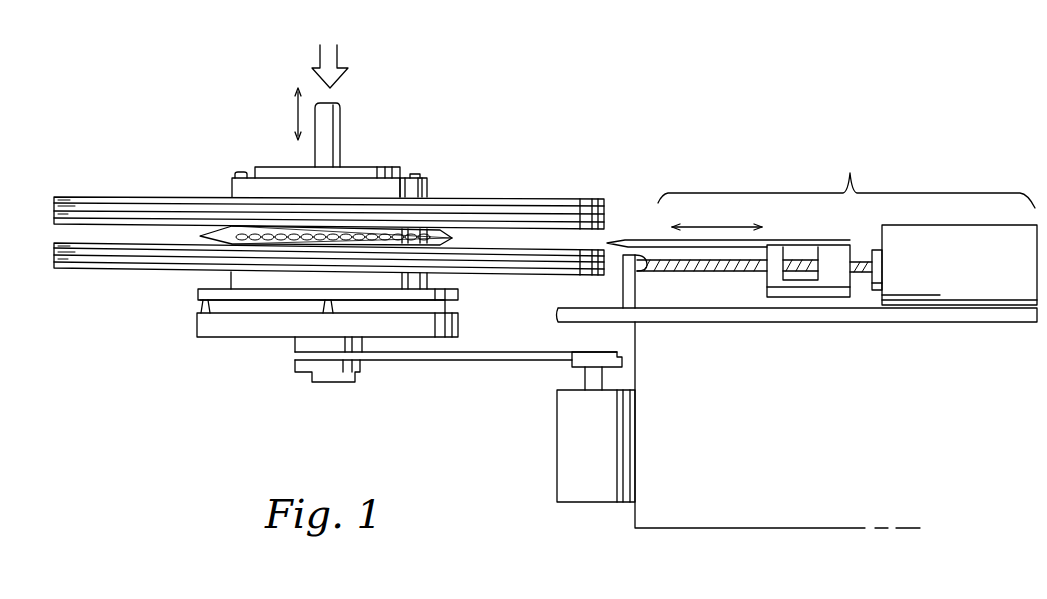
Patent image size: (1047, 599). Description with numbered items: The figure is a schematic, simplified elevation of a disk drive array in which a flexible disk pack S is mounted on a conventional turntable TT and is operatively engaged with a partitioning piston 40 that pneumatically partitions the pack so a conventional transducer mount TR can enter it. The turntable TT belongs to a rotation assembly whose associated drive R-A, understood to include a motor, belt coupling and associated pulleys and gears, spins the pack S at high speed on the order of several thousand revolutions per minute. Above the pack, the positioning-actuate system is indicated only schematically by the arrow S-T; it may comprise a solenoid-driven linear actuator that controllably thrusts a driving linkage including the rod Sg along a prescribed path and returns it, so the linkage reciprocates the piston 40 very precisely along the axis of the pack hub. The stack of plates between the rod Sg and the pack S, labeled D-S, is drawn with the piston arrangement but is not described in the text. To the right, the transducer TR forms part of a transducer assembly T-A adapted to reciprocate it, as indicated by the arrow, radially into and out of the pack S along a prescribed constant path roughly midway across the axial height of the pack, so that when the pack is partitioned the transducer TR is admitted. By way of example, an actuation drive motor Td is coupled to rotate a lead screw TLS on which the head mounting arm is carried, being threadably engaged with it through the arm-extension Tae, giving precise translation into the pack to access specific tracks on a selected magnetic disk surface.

The flexible disk pack S is at (118, 193).
The sheet holder / drive support D-S is at (232, 193).
The rod Sg is at (340, 138).
The positioning-actuate system arrow S-T is at (337, 57).
The partitioning piston 40 is at (397, 172).
The turntable TT is at (197, 293).
The drive R-A is at (553, 380).
The transducer mount TR is at (622, 238).
The transducer assembly T-A is at (797, 235).
The lead screw TLS is at (712, 273).
The arm-extension Tae is at (825, 300).
The actuation drive motor Td is at (963, 293).